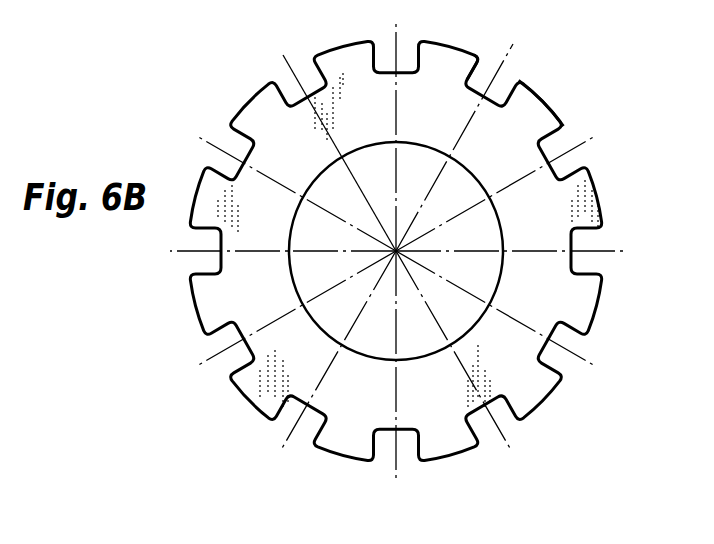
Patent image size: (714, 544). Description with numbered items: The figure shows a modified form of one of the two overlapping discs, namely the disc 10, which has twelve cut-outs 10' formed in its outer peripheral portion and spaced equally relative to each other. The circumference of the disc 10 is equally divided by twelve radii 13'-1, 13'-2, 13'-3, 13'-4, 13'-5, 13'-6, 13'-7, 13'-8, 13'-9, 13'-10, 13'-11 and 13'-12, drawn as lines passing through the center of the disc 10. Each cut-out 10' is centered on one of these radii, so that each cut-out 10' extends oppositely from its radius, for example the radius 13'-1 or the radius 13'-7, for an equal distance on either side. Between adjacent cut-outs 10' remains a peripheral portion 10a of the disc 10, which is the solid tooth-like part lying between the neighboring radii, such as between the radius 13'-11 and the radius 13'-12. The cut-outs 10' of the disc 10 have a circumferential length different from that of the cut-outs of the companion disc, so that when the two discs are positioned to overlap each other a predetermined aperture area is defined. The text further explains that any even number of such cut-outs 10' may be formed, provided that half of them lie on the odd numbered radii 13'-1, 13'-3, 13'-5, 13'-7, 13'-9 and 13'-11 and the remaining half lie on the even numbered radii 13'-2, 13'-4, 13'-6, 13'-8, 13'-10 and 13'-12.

The disc 10 is at (401, 250).
The portion between adjacent radii 10a is at (545, 97).
The cut-out 10' is at (496, 47).
The radius 13'-1 is at (358, 126).
The radius 13'-2 is at (300, 142).
The radius 13'-3 is at (255, 194).
The radius 13'-4 is at (249, 278).
The radius 13'-5 is at (256, 310).
The radius 13'-6 is at (298, 351).
The radius 13'-7 is at (442, 381).
The radius 13'-8 is at (493, 361).
The radius 13'-9 is at (528, 311).
The radius 13'-10 is at (540, 268).
The radius 13'-11 is at (533, 194).
The radius 13'-12 is at (496, 145).